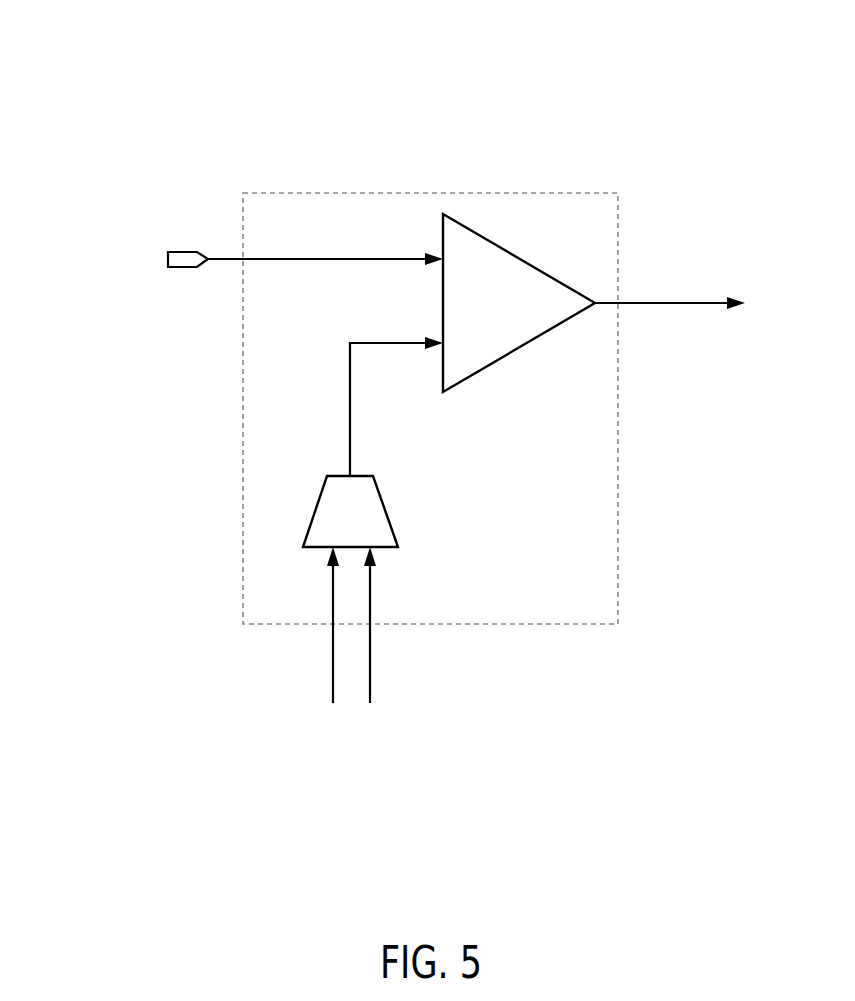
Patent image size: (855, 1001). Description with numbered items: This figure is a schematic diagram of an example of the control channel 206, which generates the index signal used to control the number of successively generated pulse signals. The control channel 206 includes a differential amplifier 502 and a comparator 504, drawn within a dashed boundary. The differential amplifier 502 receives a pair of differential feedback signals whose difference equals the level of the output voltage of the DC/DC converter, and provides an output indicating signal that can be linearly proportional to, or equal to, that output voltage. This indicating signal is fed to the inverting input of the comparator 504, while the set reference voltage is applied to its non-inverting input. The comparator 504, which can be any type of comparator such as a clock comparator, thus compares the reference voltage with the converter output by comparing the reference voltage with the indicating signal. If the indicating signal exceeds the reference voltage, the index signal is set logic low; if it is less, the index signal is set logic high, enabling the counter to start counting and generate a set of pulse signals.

The control channel 206 is at (146, 98).
The differential amplifier 502 is at (384, 508).
The comparator 504 is at (518, 257).